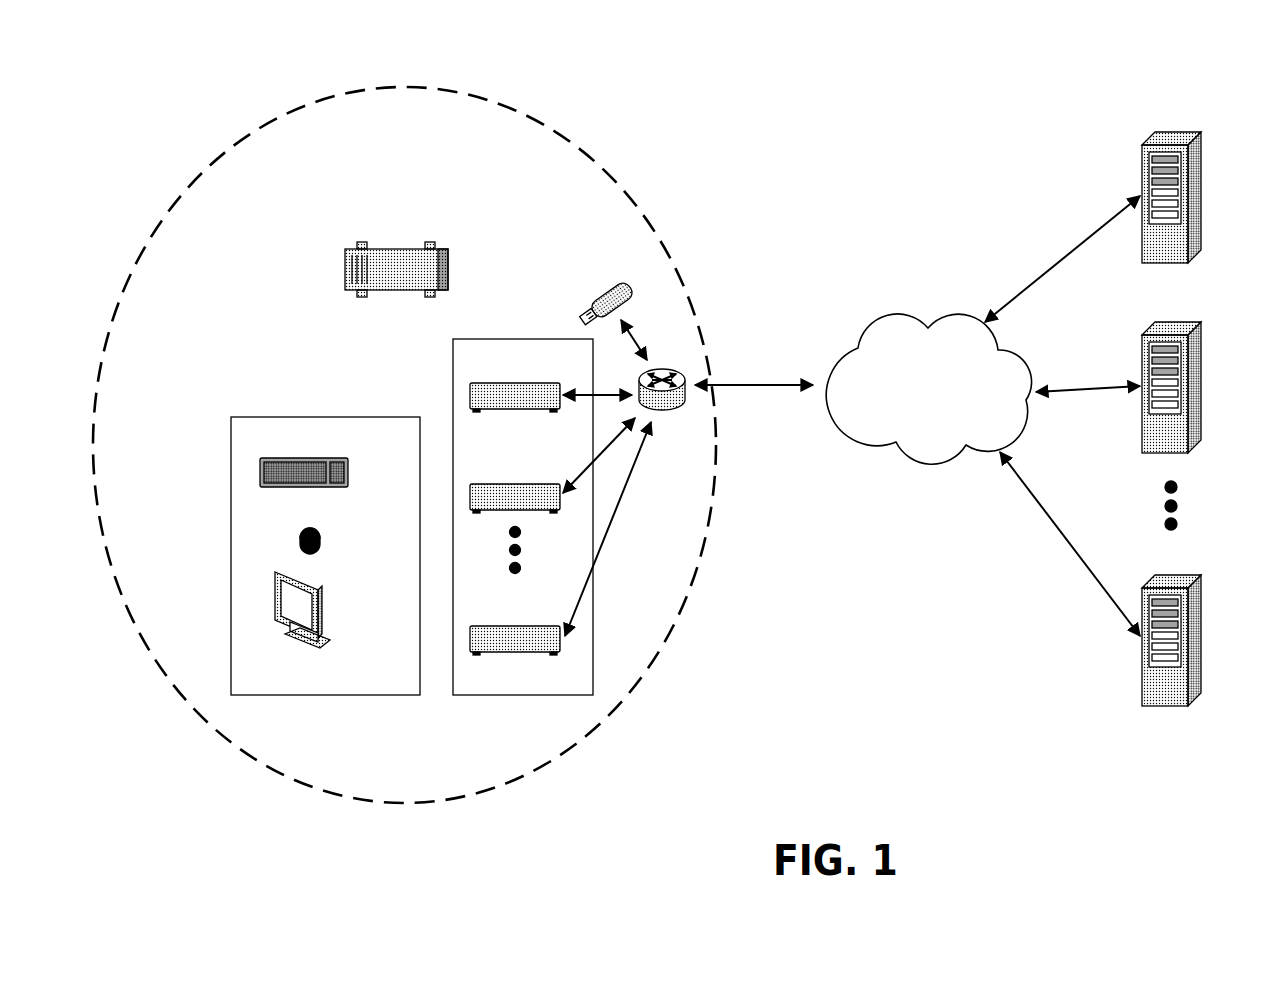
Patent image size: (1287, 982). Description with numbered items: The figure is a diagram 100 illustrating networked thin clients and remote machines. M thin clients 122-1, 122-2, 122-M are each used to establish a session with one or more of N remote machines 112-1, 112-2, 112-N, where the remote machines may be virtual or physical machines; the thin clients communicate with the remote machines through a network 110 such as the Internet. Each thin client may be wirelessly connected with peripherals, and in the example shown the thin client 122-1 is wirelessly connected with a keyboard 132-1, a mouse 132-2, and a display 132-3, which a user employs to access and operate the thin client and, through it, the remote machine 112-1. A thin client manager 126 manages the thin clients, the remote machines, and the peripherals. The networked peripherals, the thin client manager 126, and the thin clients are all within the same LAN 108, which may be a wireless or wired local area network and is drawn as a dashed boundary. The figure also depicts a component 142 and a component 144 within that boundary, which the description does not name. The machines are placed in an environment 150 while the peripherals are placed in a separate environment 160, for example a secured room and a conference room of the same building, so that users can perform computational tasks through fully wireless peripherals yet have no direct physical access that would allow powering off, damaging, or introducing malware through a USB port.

The diagram 100 is at (132, 82).
The LAN 108 is at (608, 167).
The network 110 is at (906, 318).
The remote machine 112-1 is at (1203, 163).
The remote machine 112-2 is at (1203, 368).
The remote machine 112-N is at (1221, 621).
The thin client 122-1 is at (500, 383).
The thin client 122-2 is at (500, 484).
The thin client 122-M is at (500, 626).
The thin client manager 126 is at (452, 270).
The keyboard 132-1 is at (350, 470).
The mouse 132-2 is at (321, 536).
The display 132-3 is at (328, 606).
The router 142 is at (664, 368).
The USB device 144 is at (632, 290).
The environment 150 is at (478, 339).
The environment 160 is at (272, 417).